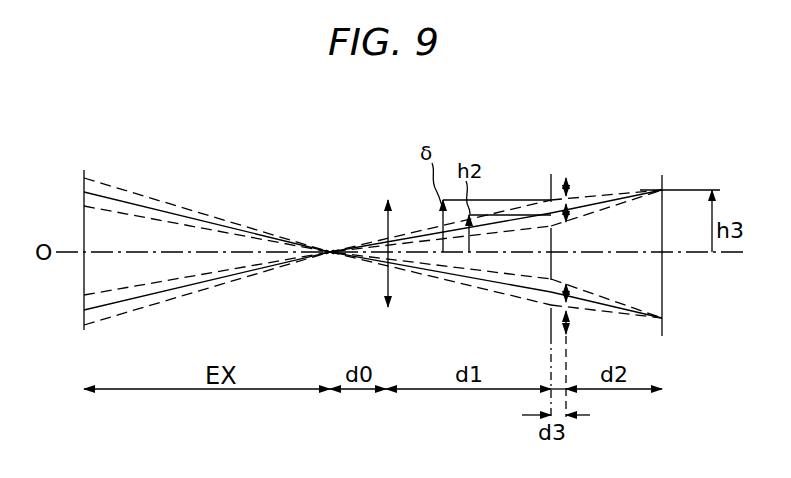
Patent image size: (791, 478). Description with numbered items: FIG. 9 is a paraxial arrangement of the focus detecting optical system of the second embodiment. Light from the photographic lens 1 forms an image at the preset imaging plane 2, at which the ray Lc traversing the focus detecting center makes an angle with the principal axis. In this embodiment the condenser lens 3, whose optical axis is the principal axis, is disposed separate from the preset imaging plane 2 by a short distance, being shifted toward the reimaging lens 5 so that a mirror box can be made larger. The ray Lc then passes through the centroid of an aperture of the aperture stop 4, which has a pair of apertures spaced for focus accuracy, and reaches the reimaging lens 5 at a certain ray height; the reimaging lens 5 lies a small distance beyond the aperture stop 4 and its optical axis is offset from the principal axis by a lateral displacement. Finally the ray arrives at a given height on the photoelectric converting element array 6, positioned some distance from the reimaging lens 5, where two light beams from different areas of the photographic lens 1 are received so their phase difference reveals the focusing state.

The photographic lens 1 is at (84, 170).
The preset imaging plane 2 is at (329, 256).
The condenser lens 3 is at (388, 200).
The aperture stop 4 is at (551, 174).
The reimaging lens 5 is at (566, 178).
The photoelectric converting element array 6 is at (662, 175).